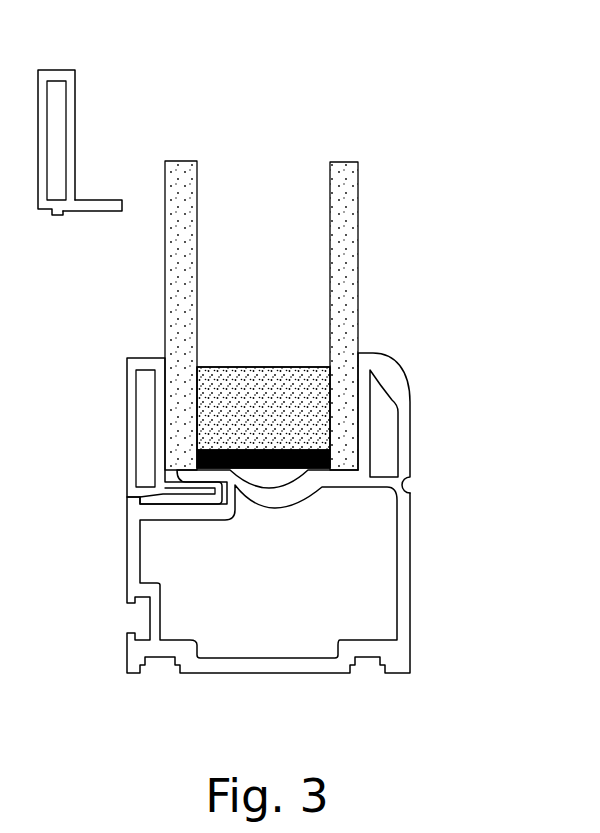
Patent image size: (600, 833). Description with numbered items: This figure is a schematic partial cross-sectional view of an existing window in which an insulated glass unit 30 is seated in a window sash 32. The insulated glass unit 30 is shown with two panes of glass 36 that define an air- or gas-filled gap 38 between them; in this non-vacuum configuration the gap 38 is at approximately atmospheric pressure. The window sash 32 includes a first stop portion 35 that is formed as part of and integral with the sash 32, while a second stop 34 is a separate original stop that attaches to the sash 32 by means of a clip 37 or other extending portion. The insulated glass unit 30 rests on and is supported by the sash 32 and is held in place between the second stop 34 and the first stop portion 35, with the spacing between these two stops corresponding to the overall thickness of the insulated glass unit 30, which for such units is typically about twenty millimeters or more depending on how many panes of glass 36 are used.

The insulated glass unit 30 is at (367, 253).
The window sash 32 is at (347, 600).
The second stop 34 is at (65, 110).
The first stop portion 35 is at (411, 441).
The panes of glass 36 is at (180, 173).
The clip 37 is at (100, 193).
The gap 38 is at (262, 187).